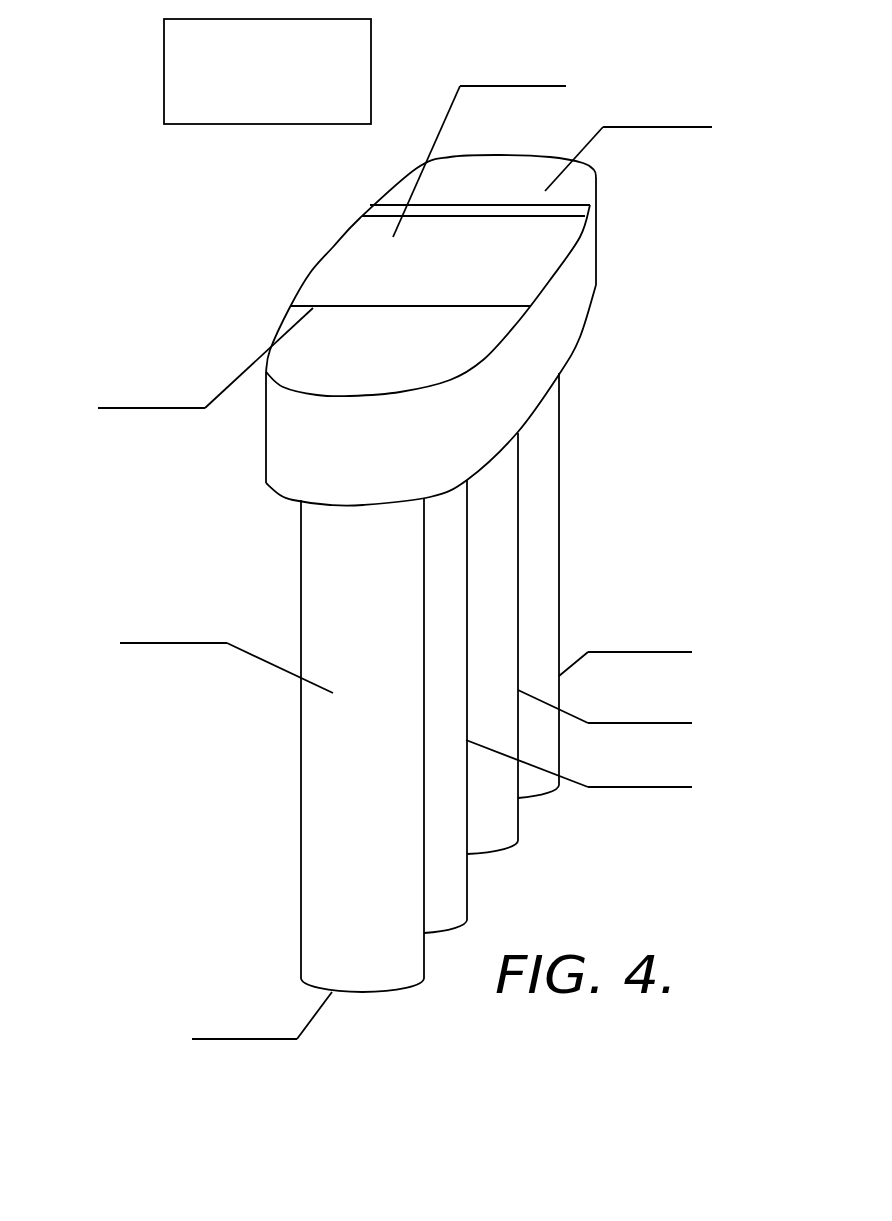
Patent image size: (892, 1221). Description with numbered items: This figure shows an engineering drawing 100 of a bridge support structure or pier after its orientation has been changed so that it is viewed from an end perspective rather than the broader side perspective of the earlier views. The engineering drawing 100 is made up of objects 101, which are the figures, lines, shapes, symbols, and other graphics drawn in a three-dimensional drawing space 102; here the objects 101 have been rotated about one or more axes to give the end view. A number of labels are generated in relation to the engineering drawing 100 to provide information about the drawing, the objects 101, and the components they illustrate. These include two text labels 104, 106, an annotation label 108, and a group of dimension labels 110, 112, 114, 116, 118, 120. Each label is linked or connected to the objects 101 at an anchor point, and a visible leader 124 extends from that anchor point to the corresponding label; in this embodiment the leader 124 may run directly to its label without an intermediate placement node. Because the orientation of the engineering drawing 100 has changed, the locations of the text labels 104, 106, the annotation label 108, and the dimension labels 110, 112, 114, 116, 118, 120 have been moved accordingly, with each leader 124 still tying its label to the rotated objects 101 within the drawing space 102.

The engineering drawing 100 is at (110, 268).
The objects 101 is at (265, 460).
The drawing space 102 is at (650, 888).
The text label 104 is at (105, 392).
The text label 106 is at (488, 69).
The annotation label 108 is at (252, 124).
The dimension label 110 is at (712, 112).
The dimension label 112 is at (693, 633).
The dimension label 114 is at (693, 703).
The dimension label 116 is at (693, 773).
The dimension label 118 is at (118, 628).
The dimension label 120 is at (193, 1020).
The leader 124 is at (447, 115).